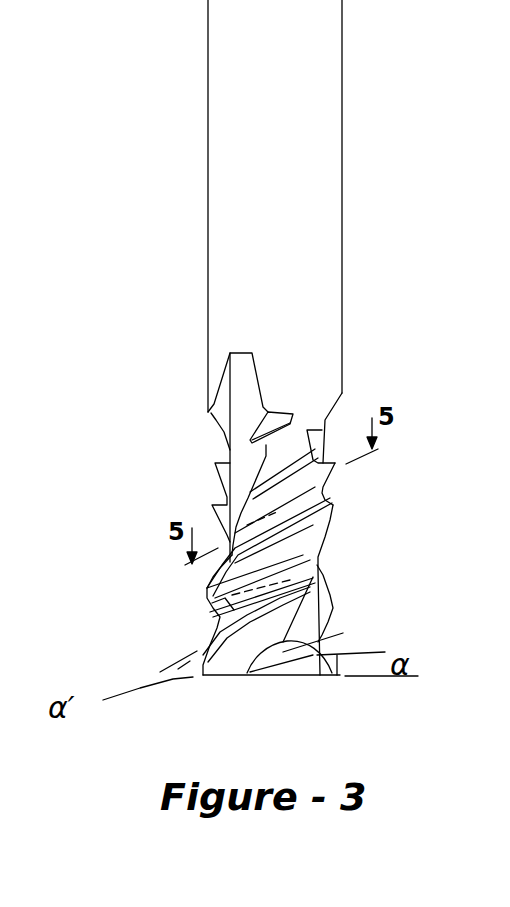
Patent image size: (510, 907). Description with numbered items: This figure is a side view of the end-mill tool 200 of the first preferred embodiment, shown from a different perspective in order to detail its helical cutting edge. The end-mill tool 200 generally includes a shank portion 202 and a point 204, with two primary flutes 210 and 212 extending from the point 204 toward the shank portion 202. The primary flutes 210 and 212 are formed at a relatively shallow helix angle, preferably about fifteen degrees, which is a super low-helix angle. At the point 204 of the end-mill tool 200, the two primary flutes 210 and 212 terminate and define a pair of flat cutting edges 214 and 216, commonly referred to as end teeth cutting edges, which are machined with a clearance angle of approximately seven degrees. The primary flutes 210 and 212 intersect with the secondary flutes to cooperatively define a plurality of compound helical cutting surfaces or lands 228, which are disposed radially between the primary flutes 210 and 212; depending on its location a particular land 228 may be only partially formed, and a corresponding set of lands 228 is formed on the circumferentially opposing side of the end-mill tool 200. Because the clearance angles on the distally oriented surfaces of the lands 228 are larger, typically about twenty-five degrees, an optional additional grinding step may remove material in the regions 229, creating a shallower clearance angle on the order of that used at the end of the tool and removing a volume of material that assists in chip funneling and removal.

The end-mill tool 200 is at (158, 70).
The shank portion 202 is at (212, 181).
The point 204 is at (295, 688).
The primary flute 210 is at (242, 393).
The primary flute 212 is at (307, 633).
The flat cutting edge 214 is at (332, 680).
The flat cutting edge 216 is at (212, 676).
The compound helical cutting surfaces or lands 228 is at (287, 712).
The regions 229 is at (161, 621).